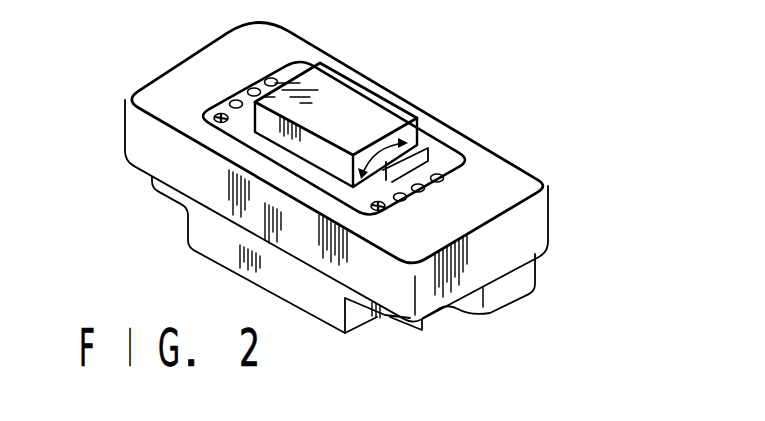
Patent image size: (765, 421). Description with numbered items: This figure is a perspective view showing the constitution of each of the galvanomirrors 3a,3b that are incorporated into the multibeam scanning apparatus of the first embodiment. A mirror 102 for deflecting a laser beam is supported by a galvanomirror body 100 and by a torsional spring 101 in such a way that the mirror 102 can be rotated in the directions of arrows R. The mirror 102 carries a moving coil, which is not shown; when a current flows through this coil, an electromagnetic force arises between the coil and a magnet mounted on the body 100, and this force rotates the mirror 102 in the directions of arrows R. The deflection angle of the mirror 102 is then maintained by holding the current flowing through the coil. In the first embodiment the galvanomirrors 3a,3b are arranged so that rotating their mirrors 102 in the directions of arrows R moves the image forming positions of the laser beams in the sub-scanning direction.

The galvanomirror body 100 is at (502, 175).
The torsional spring 101 is at (425, 152).
The mirror 102 is at (343, 91).
The galvanomirrors 3a,3b is at (523, 291).
The arrows R is at (378, 147).